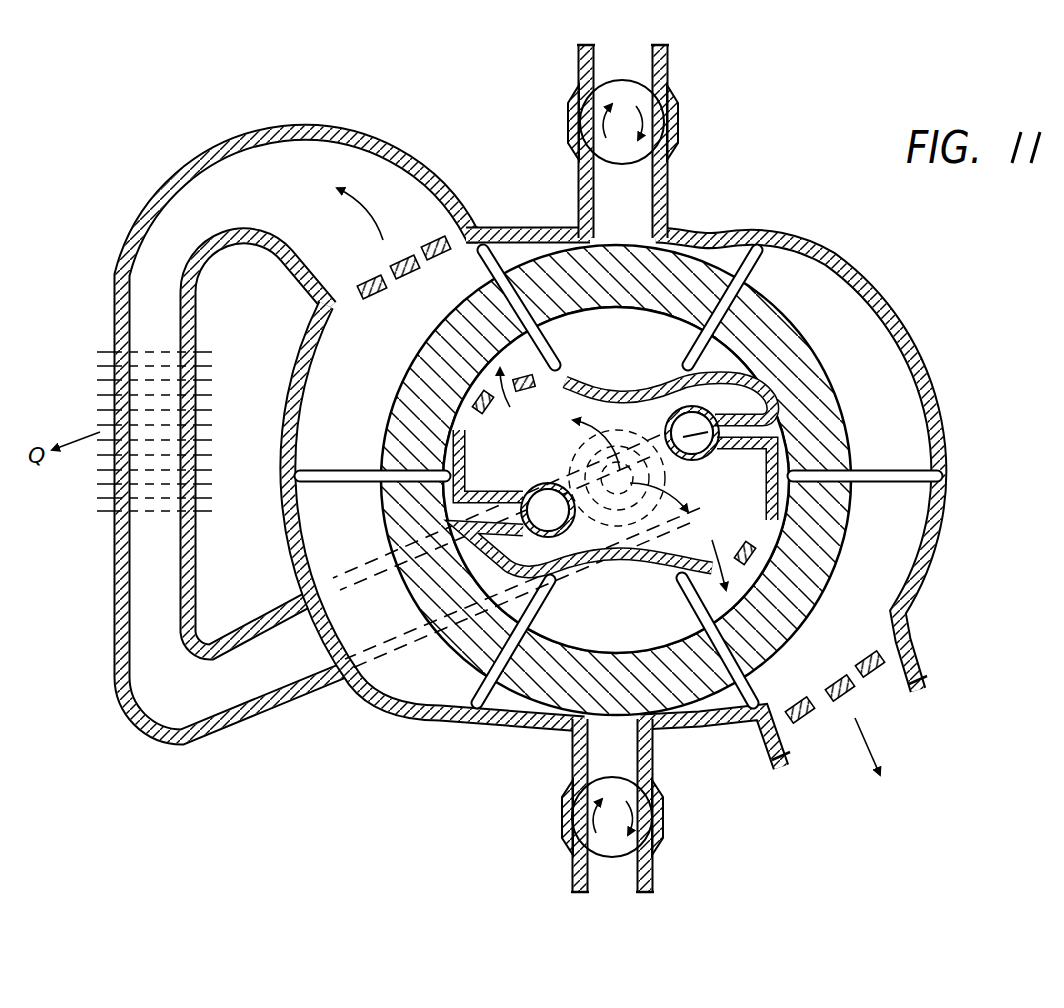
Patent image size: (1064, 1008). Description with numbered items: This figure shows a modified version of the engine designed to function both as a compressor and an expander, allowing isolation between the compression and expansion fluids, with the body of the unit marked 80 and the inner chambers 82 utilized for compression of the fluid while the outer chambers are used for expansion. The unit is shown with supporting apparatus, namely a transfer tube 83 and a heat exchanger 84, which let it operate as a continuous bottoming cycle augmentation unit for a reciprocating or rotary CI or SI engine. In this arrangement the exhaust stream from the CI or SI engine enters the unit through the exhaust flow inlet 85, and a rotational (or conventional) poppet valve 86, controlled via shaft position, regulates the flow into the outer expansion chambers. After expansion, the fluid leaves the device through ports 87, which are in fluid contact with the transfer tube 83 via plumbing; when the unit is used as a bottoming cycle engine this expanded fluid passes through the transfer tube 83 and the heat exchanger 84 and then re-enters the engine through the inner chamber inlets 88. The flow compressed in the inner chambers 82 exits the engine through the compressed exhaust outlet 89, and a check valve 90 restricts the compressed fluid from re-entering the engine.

The housing 80 is at (613, 501).
The inner chamber 82 is at (529, 518).
The transfer tube 83 is at (142, 205).
The heat exchanger 84 is at (113, 383).
The exhaust flow inlet 85 is at (592, 50).
The poppet valve 86 is at (682, 116).
The port 87 is at (895, 648).
The inner chamber inlet 88 is at (470, 418).
The compressed exhaust outlet 89 is at (480, 495).
The check valve 90 is at (548, 510).